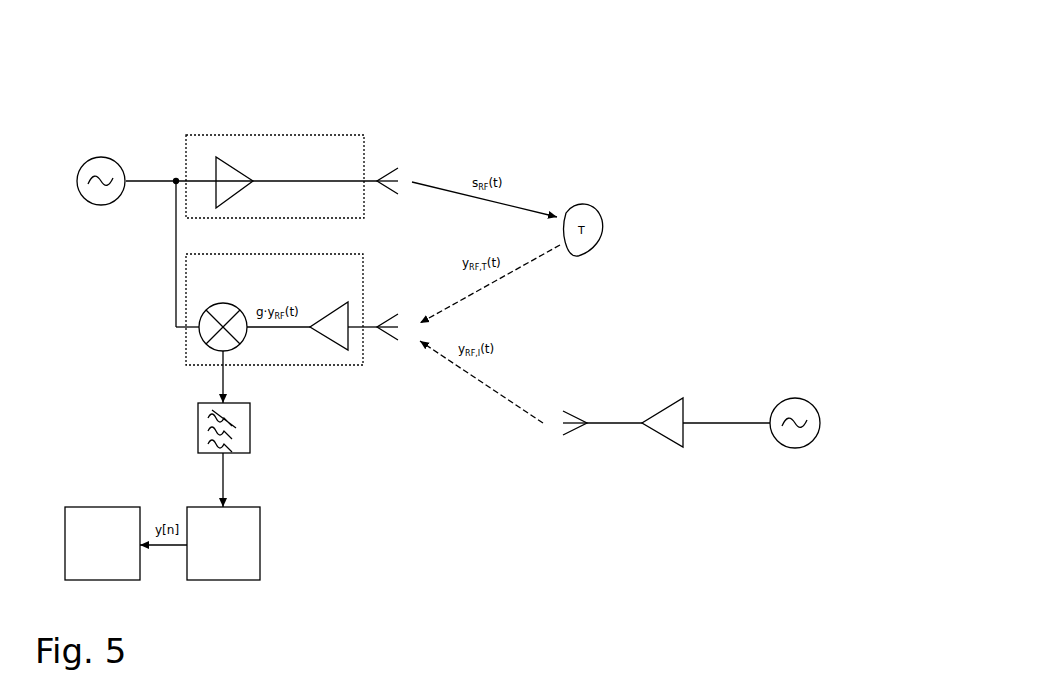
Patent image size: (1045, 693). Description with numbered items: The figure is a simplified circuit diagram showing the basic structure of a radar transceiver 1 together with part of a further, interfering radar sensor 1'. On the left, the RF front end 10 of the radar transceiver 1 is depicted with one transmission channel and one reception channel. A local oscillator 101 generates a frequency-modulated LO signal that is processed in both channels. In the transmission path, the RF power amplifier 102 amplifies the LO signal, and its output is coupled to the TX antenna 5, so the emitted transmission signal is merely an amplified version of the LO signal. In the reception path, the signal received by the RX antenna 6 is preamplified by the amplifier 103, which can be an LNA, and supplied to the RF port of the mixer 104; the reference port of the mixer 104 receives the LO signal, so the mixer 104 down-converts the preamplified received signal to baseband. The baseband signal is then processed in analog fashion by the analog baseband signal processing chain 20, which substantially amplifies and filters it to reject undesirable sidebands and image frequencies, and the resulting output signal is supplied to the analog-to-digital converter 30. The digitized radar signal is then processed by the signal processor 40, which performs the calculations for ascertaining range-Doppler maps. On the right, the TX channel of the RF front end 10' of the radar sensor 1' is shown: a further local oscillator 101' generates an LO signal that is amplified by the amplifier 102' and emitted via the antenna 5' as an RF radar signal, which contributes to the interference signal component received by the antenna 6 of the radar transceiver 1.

The radar transceiver 1 is at (226, 178).
The RF front end 10 is at (198, 248).
The local oscillator 101 is at (101, 166).
The RF power amplifier 102 is at (244, 177).
The TX antenna 5 is at (387, 162).
The mixer 104 is at (228, 302).
The amplifier 103 is at (327, 303).
The RX antenna 6 is at (386, 313).
The analog baseband signal processing chain 20 is at (252, 430).
The analog-to-digital converter 30 is at (223, 543).
The signal processor 40 is at (102, 543).
The RF front end 10' is at (706, 351).
The radar sensor 1' is at (775, 376).
The local oscillator 101' is at (795, 405).
The amplifier 102' is at (664, 405).
The antenna 5' is at (575, 403).